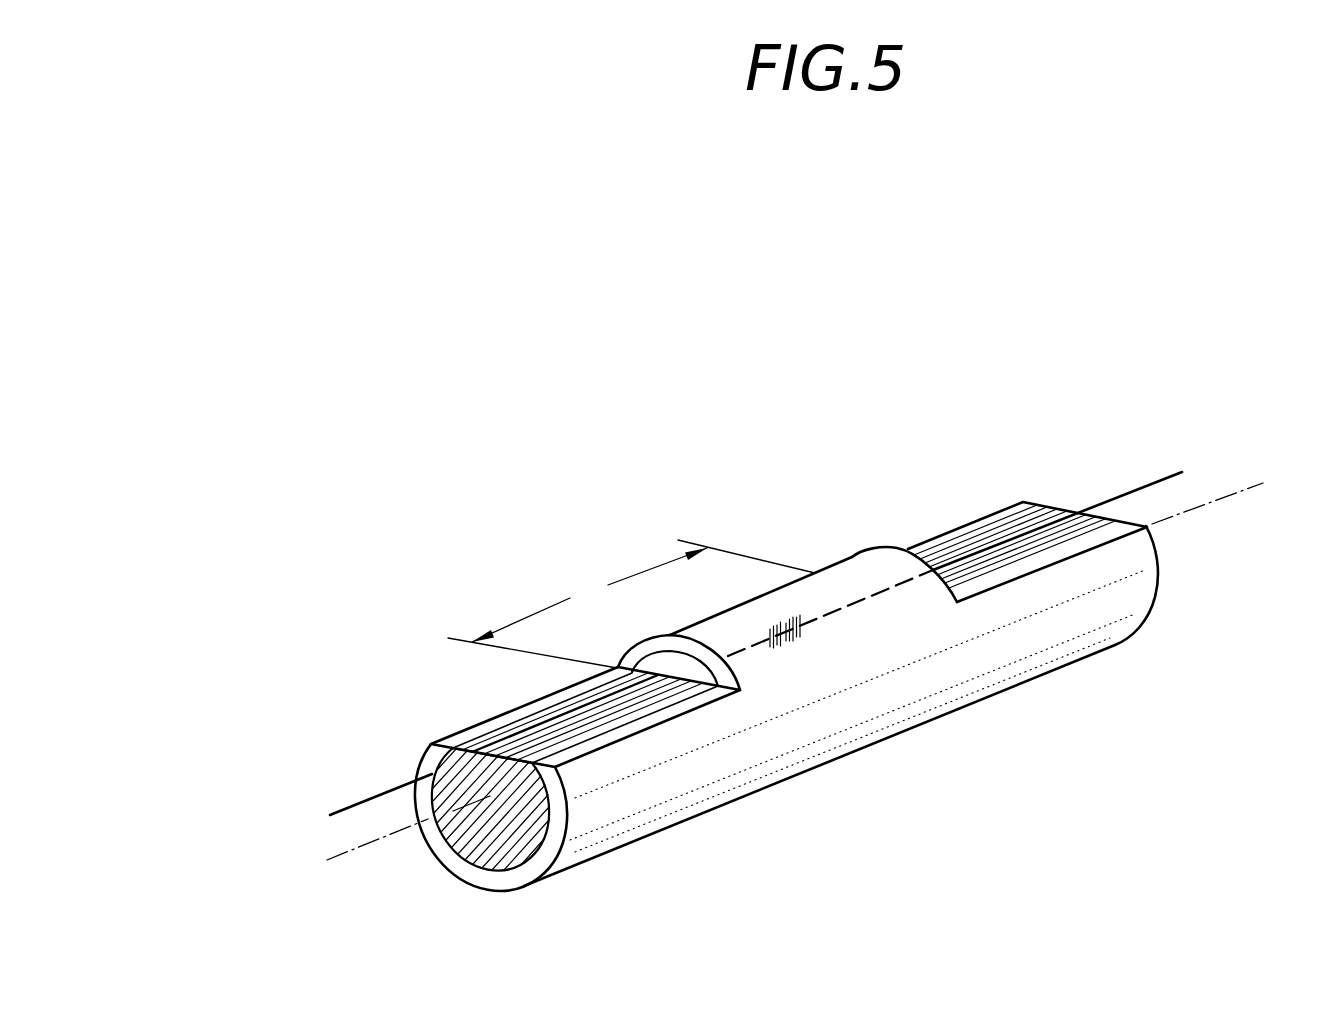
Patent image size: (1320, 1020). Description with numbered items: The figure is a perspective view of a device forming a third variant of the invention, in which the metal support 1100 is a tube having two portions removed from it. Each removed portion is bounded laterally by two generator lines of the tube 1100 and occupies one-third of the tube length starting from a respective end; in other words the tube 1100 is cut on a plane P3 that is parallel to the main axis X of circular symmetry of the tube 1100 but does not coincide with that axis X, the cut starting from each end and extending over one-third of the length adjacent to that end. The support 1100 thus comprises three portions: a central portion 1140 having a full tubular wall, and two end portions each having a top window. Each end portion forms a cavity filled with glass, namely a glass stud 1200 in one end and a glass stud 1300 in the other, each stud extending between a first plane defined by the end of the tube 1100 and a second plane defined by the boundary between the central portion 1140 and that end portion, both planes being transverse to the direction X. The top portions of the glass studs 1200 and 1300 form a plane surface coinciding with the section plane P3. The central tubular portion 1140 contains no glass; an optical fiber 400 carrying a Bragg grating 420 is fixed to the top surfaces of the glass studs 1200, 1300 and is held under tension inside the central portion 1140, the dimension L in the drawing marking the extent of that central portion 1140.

The metal support 1100 is at (852, 722).
The glass stud 1200 is at (475, 727).
The glass stud 1300 is at (1047, 517).
The central portion 1140 is at (842, 585).
The Bragg grating 420 is at (793, 627).
The optical fiber 400 is at (1190, 450).
The section plane P3 is at (1008, 506).
The main axis X is at (812, 656).
The length L is at (631, 604).